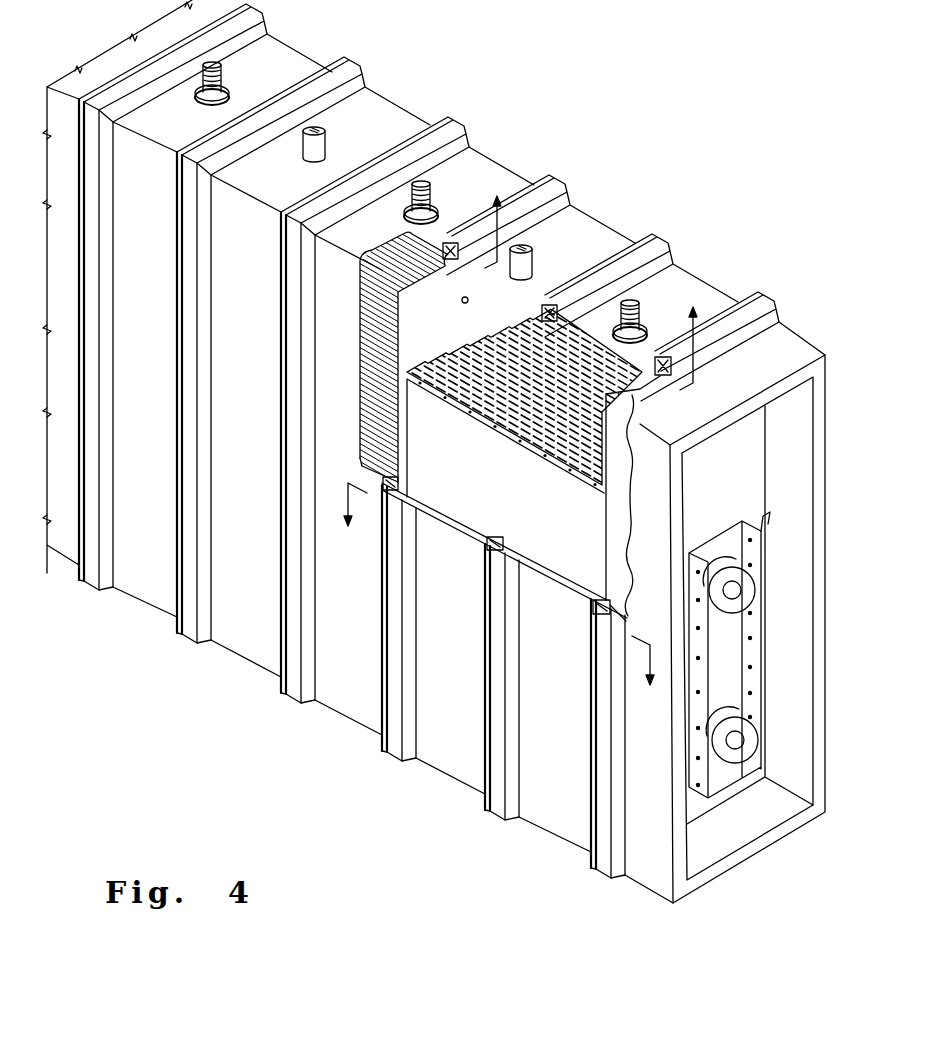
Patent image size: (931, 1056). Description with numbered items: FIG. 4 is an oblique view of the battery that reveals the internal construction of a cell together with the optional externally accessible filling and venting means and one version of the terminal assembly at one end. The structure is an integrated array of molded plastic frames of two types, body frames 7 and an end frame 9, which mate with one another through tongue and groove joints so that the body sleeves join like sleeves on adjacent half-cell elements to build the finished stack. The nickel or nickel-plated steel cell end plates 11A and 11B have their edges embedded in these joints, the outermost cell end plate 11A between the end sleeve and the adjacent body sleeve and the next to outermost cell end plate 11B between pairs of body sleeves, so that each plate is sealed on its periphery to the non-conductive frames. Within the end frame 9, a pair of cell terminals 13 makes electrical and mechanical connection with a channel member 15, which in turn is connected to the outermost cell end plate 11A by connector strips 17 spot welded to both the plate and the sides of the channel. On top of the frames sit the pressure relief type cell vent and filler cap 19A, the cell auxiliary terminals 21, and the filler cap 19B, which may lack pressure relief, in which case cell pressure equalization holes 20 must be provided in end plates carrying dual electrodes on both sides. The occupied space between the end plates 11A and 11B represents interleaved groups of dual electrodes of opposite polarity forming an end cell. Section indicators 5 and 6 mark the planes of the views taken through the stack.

The section line 5-5 view indicator 5 is at (498, 593).
The section line 6-6 view indicator 6 is at (591, 282).
The body frame 7 is at (155, 607).
The end frame 9 is at (672, 898).
The outermost cell end plate 11A is at (614, 490).
The next to outermost cell end plate 11B is at (422, 330).
The cell terminals 13 is at (748, 593).
The channel member 15 is at (736, 522).
The connector strips 17 is at (768, 521).
The pressure relief type cell vent and filler cap 19A is at (534, 268).
The filler cap 19B is at (327, 149).
The cell pressure equalization holes 20 is at (462, 302).
The cell auxiliary terminal 21 is at (229, 88).